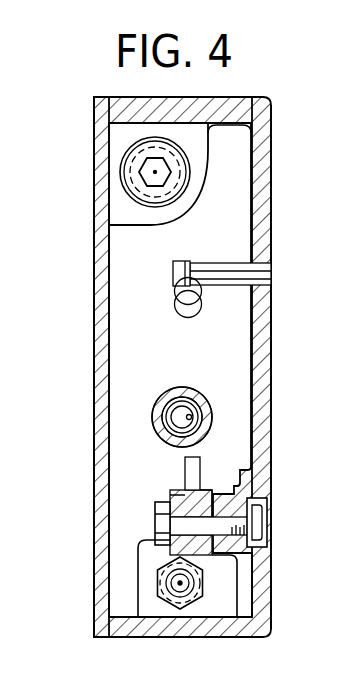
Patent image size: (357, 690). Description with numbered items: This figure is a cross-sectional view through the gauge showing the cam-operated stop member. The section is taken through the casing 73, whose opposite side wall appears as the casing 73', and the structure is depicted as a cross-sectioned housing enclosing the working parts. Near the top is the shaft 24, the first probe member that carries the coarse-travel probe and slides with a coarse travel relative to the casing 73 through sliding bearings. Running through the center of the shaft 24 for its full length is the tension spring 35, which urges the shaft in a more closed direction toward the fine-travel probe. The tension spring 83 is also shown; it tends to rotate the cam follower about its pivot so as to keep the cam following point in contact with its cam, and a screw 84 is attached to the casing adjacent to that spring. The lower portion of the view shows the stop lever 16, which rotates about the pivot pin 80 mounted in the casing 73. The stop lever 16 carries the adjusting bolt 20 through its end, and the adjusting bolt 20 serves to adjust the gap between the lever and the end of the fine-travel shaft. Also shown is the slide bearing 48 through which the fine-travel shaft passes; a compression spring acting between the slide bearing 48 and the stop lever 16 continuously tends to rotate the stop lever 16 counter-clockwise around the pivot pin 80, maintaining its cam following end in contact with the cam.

The adjusting screw 84 is at (238, 272).
The tension spring 83 is at (174, 306).
The shaft 24 is at (172, 401).
The tension spring 35 is at (168, 437).
The pivot pin 80 is at (170, 510).
The casing 73 is at (285, 363).
The opposite side plate 73' is at (76, 367).
The stop lever 16 is at (240, 567).
The slide bearing 48 is at (152, 606).
The adjusting bolt 20 is at (178, 590).